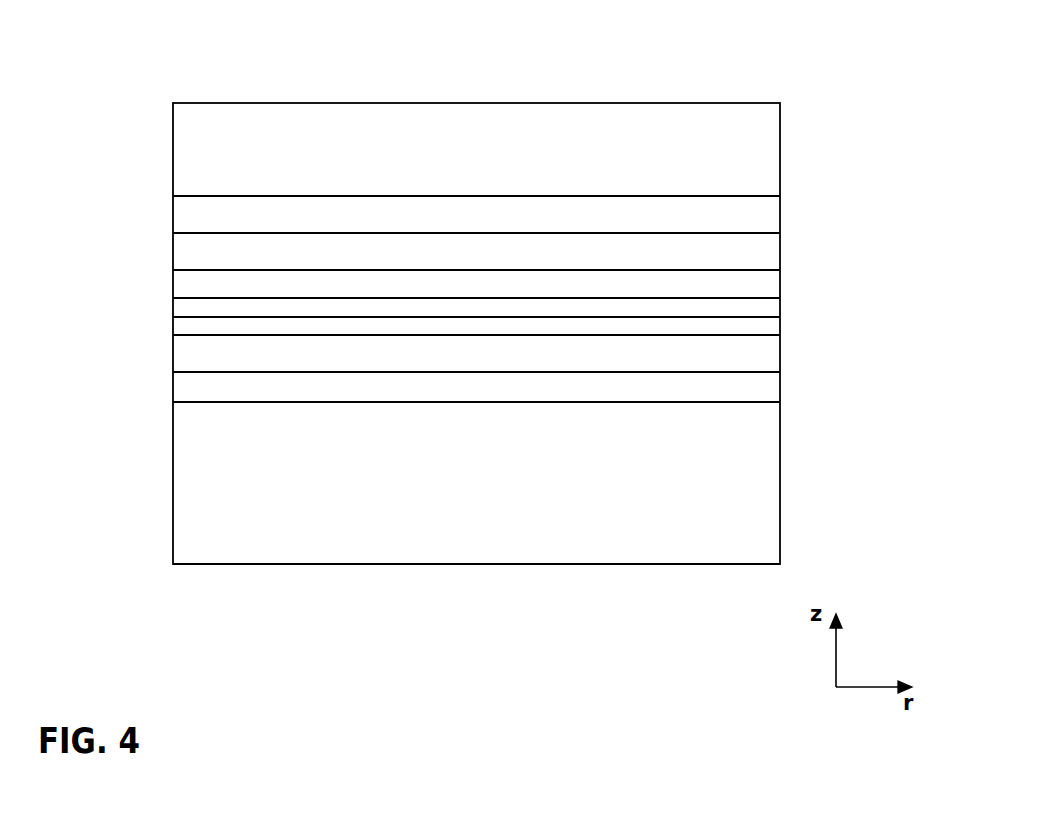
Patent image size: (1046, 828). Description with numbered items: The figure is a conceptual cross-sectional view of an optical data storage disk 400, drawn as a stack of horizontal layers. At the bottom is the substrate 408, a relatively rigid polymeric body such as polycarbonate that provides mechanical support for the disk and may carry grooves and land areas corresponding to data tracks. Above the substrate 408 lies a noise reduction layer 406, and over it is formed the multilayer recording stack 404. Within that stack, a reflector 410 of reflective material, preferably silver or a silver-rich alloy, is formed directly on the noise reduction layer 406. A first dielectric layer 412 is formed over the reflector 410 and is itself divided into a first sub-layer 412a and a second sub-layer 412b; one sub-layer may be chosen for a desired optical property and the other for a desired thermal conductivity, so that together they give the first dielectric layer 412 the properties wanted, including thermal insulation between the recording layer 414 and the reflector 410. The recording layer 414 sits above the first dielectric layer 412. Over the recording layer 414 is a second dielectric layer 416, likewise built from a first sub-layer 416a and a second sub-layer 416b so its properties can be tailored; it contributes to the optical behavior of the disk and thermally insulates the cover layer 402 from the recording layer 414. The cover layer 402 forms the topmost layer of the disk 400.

The optical data storage disk 400 is at (143, 74).
The cover layer 402 is at (193, 143).
The multilayer recording stack 404 is at (876, 195).
The noise reduction layer 406 is at (193, 386).
The substrate 408 is at (193, 481).
The reflector 410 is at (193, 353).
The first dielectric layer 412 is at (162, 298).
The first sub-layer 412a is at (773, 304).
The second sub-layer 412b is at (772, 324).
The recording layer 414 is at (193, 283).
The second dielectric layer 416 is at (162, 195).
The first sub-layer 416a is at (766, 212).
The second sub-layer 416b is at (766, 253).